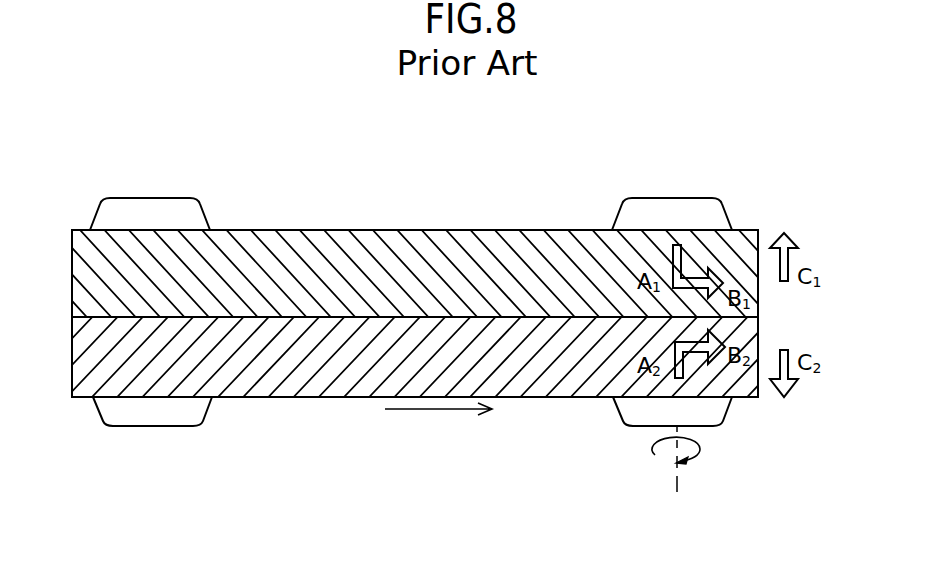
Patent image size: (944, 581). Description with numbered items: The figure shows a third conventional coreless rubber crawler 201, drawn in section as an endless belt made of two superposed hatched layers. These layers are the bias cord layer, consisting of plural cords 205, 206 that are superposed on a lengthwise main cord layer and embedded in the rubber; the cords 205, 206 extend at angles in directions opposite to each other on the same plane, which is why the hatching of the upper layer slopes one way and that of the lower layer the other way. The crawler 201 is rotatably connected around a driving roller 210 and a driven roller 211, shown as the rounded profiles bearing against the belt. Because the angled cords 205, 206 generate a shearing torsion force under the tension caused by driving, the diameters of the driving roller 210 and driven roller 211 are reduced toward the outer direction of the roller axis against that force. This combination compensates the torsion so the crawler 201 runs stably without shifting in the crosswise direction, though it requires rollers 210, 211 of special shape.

The rubber crawler 201 is at (293, 401).
The bias cord 205 is at (485, 257).
The bias cord 206 is at (525, 363).
The driving roller 210 is at (635, 410).
The driven roller 211 is at (152, 408).